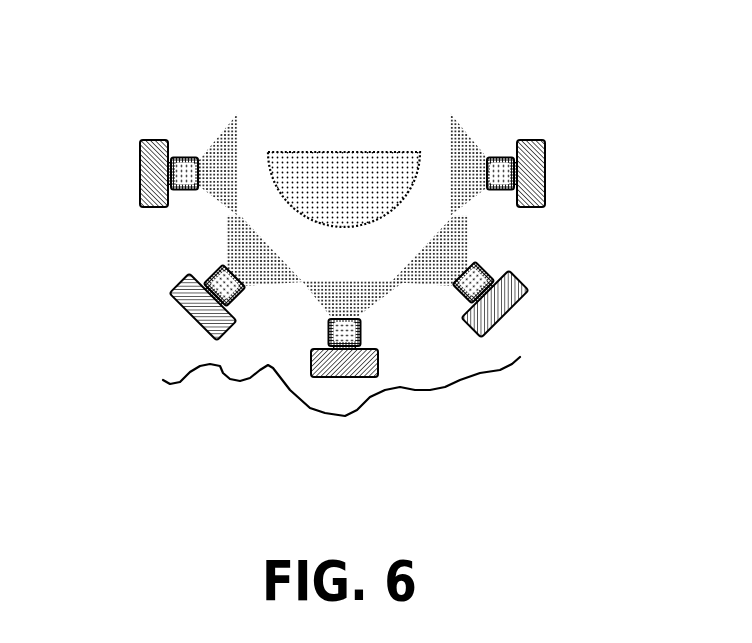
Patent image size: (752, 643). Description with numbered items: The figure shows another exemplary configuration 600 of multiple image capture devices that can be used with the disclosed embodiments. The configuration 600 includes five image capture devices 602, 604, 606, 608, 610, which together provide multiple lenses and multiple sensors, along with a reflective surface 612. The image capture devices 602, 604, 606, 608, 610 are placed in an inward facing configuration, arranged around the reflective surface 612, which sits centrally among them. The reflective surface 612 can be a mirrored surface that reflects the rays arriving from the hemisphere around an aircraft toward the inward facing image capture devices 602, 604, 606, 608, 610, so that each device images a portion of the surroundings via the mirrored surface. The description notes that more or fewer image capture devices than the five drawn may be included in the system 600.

The configuration of multiple image capture devices 600 is at (632, 71).
The image capture device 602 is at (140, 143).
The image capture device 604 is at (180, 283).
The image capture device 606 is at (322, 349).
The image capture device 608 is at (520, 287).
The image capture device 610 is at (545, 168).
The reflective surface 612 is at (333, 155).